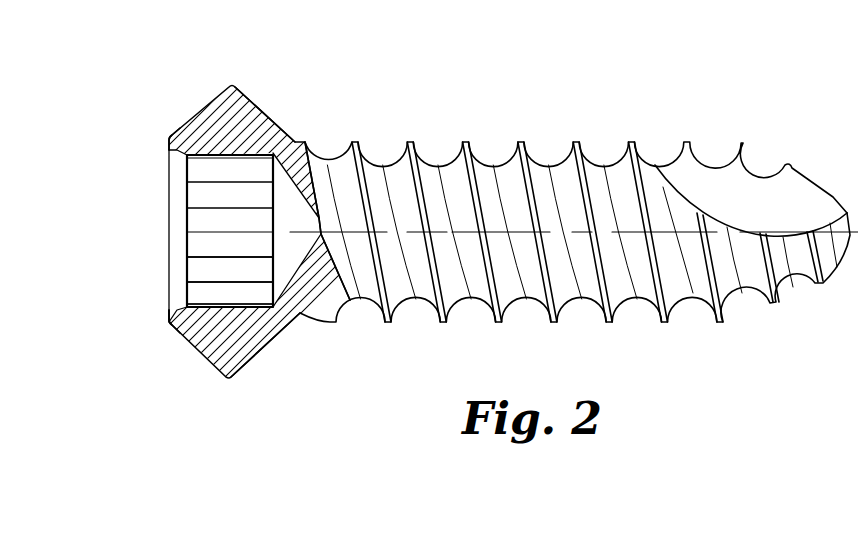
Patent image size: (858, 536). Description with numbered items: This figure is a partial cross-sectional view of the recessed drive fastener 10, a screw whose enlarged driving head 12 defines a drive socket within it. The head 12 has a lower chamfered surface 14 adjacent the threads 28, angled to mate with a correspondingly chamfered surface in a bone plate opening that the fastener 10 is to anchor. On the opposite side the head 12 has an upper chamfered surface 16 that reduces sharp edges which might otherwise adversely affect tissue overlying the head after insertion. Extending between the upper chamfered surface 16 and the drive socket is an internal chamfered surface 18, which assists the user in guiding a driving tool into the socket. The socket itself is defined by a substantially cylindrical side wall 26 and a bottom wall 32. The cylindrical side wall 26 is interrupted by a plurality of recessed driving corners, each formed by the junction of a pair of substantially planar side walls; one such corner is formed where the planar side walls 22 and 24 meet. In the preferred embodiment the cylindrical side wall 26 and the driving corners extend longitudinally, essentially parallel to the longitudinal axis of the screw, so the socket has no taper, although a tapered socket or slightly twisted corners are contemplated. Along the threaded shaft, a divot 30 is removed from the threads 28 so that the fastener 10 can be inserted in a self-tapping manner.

The fastener 10 is at (425, 130).
The enlarged driving head 12 is at (233, 108).
The lower chamfered surface 14 is at (262, 110).
The upper chamfered surface 16 is at (192, 345).
The internal chamfered surface 18 is at (170, 150).
The planar side wall 22 is at (195, 248).
The planar side wall 24 is at (197, 217).
The cylindrical side wall 26 is at (232, 270).
The threads 28 is at (538, 148).
The divot 30 is at (740, 194).
The bottom wall 32 is at (289, 210).